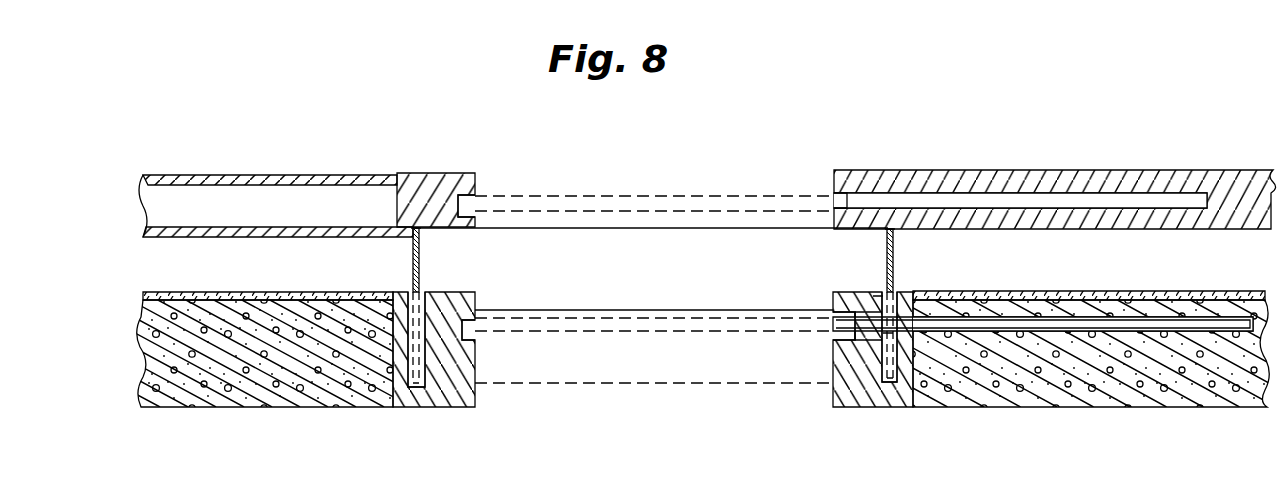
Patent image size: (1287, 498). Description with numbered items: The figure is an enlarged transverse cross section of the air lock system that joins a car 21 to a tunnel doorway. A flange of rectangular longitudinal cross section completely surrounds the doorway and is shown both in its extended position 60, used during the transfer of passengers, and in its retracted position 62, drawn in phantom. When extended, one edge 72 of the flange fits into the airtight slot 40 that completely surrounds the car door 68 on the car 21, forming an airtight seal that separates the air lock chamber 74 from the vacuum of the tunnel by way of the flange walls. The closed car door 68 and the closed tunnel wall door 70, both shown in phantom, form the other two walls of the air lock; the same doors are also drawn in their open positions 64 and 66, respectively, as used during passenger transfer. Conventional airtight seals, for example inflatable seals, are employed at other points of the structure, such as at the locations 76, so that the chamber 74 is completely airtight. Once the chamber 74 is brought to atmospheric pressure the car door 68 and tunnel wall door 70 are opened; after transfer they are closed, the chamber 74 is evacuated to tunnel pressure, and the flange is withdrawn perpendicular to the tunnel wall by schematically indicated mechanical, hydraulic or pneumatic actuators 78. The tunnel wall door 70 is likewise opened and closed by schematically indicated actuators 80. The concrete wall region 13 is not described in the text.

The concrete wall 13 is at (262, 300).
The car 21 is at (272, 177).
The airtight slot 40 is at (413, 228).
The extended position 60 is at (412, 257).
The retracted position 62 is at (598, 384).
The open position of car door 64 is at (1055, 195).
The open position of tunnel wall door 66 is at (1080, 320).
The car door 68 is at (733, 173).
The tunnel wall door 70 is at (735, 332).
The edge 72 is at (667, 228).
The air lock chamber 74 is at (545, 245).
The locations 76 is at (472, 216).
The actuators 78 is at (383, 303).
The actuators 80 is at (870, 335).